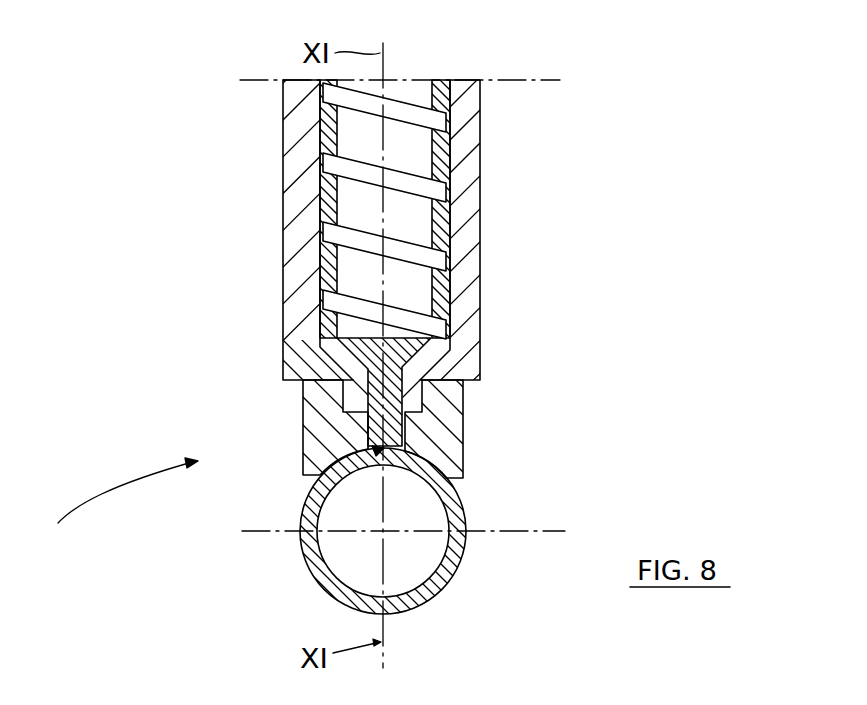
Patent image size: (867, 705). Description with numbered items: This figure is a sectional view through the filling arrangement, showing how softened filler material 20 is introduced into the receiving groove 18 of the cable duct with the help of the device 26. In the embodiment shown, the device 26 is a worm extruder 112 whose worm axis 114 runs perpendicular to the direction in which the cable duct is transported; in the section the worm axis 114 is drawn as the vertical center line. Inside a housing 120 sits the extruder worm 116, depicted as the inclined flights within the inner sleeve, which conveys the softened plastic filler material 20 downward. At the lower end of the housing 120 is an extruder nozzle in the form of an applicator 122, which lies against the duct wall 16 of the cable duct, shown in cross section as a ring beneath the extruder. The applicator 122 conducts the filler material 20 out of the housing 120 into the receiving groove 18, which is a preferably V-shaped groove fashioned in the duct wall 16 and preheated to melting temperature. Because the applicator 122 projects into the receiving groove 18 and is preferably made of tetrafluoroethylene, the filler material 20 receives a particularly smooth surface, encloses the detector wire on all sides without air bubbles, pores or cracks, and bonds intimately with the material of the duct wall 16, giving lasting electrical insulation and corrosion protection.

The duct wall 16 is at (462, 508).
The receiving groove 18 is at (376, 448).
The filler material 20 is at (340, 352).
The device 26 is at (120, 511).
The worm extruder 112 is at (492, 144).
The worm axis 114 is at (383, 202).
The extruder worm 116 is at (415, 112).
The housing 120 is at (462, 268).
The applicator 122 is at (455, 432).